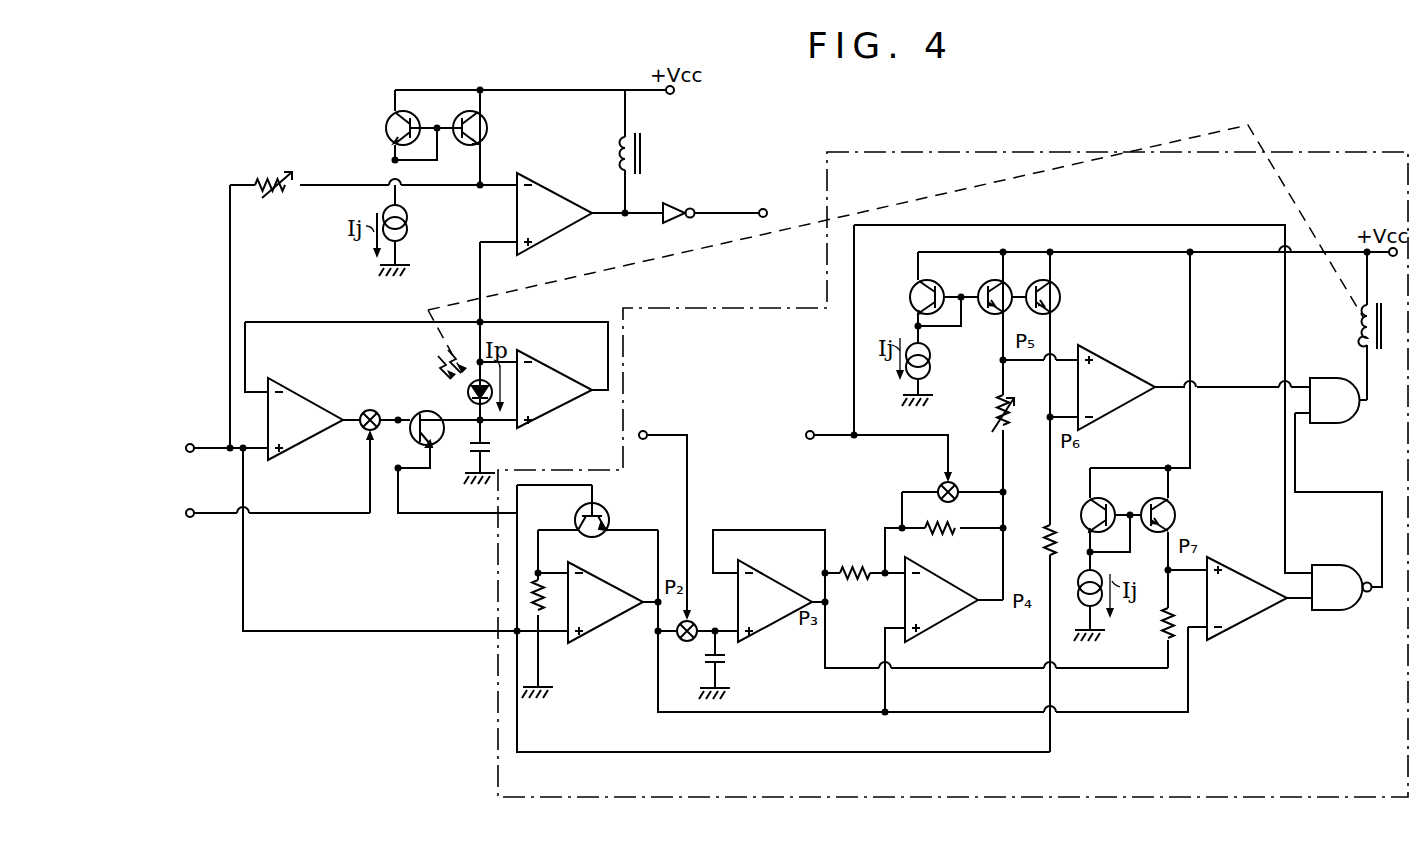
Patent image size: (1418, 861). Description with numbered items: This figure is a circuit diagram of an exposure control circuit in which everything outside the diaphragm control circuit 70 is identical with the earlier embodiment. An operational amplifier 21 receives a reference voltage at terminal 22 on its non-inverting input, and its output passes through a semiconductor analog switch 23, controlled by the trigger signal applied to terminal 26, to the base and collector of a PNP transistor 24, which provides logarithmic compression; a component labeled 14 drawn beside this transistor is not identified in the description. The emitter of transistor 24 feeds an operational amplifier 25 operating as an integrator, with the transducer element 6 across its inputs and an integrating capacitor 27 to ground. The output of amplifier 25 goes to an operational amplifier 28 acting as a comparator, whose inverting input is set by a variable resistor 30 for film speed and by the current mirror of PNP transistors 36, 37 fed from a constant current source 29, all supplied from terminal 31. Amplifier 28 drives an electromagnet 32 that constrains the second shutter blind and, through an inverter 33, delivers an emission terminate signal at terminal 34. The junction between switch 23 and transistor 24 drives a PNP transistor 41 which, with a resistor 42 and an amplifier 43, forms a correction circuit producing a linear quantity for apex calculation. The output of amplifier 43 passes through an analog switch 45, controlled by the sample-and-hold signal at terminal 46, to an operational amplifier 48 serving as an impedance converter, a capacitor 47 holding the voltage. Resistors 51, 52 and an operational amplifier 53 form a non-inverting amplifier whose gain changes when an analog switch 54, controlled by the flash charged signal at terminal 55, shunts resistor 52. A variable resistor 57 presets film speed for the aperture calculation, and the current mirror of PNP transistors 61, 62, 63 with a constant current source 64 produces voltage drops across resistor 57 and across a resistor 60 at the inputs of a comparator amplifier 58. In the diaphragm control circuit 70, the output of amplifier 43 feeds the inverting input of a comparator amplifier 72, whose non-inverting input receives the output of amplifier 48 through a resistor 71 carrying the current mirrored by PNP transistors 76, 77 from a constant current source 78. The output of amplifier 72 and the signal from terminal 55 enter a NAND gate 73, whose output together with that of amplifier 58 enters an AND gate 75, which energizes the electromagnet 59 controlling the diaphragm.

The transducer element 6 is at (476, 374).
The transistor lead 14 is at (438, 444).
The operational amplifier 21 is at (317, 412).
The terminal 22 is at (192, 452).
The semiconductor analog switch 23 is at (370, 412).
The PNP transistor 24 is at (412, 415).
The operational amplifier 25 is at (556, 380).
The terminal 26 is at (192, 517).
The integrating capacitor 27 is at (493, 449).
The operational amplifier 28 is at (552, 202).
The constant current source 29 is at (406, 228).
The variable resistor 30 is at (280, 180).
The terminal 31 is at (672, 94).
The electromagnet 32 is at (641, 156).
The inverter 33 is at (675, 210).
The terminal 34 is at (767, 214).
The PNP transistor 36 is at (484, 126).
The PNP transistor 37 is at (388, 126).
The PNP transistor 41 is at (606, 516).
The resistor 42 is at (536, 597).
The amplifier 43 is at (616, 600).
The semiconductor analog switch 45 is at (686, 642).
The terminal 46 is at (645, 439).
The capacitor 47 is at (724, 659).
The operational amplifier 48 is at (778, 598).
The resistor 51 is at (852, 570).
The resistor 52 is at (943, 540).
The operational amplifier 53 is at (939, 608).
The semiconductor analog switch 54 is at (954, 490).
The terminal 55 is at (812, 439).
The variable resistor 57 is at (1006, 422).
The operational amplifier 58 is at (1120, 374).
The electromagnet 59 is at (1362, 328).
The resistor 60 is at (1046, 542).
The PNP transistor 61 is at (1040, 288).
The PNP transistor 62 is at (988, 285).
The PNP transistor 63 is at (915, 287).
The constant current source 64 is at (931, 362).
The diaphragm control circuit 70 is at (1358, 150).
The resistor 71 is at (1161, 630).
The operational amplifier 72 is at (1240, 592).
The NAND gate 73 is at (1326, 562).
The AND gate 75 is at (1334, 422).
The PNP transistor 76 is at (1166, 502).
The PNP transistor 77 is at (1100, 500).
The constant current source 78 is at (1076, 580).